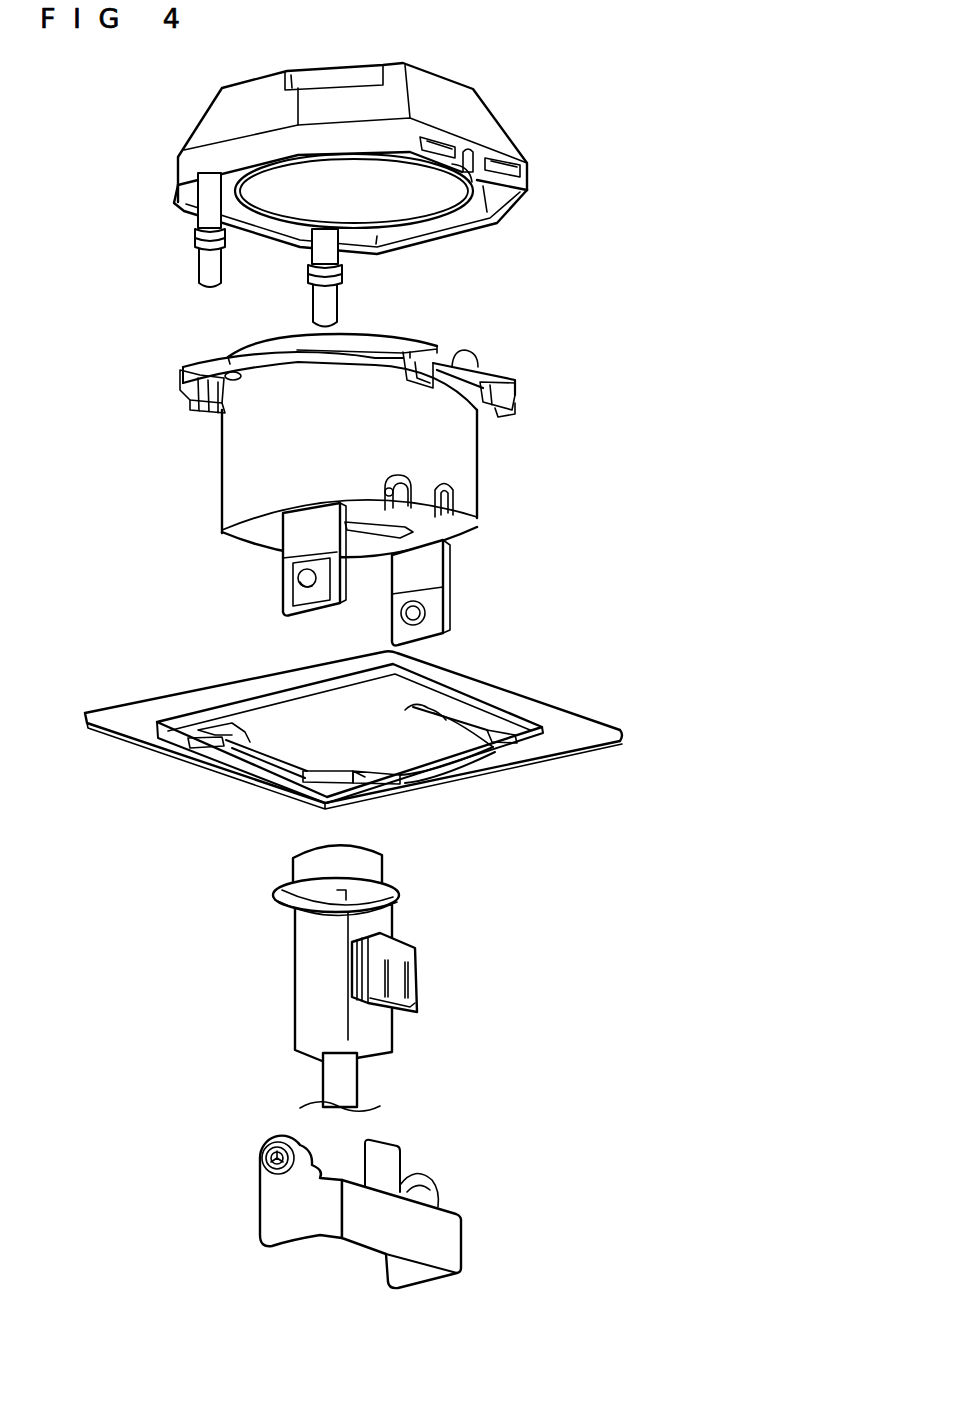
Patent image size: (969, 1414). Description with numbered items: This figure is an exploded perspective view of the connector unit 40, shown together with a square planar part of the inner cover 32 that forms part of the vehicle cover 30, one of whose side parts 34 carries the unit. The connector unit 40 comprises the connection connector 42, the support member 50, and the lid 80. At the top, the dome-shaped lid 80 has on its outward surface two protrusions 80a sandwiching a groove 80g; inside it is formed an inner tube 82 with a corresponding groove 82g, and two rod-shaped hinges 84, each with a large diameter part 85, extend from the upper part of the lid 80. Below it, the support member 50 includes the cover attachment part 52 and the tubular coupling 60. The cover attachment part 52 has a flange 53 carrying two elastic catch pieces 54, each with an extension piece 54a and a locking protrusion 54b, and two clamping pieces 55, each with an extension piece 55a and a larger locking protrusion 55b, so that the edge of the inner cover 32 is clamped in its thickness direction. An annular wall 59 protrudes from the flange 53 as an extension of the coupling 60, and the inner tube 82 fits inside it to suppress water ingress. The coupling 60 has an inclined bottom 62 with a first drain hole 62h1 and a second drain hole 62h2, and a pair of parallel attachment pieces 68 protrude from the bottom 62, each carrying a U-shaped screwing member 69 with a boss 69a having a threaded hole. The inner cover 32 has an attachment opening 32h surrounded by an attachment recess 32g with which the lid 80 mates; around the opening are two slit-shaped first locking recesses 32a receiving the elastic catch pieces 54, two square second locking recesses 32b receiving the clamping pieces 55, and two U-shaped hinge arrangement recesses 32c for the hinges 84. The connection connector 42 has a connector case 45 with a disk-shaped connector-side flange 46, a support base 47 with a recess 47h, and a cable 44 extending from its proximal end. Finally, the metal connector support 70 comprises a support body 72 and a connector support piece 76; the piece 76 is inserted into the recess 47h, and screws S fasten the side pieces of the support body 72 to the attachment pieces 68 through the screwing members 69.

The connector unit 40 is at (526, 52).
The lid 80 is at (444, 72).
The protrusions 80a is at (443, 138).
The groove 80g is at (471, 157).
The inner tube 82 is at (443, 240).
The groove 82g is at (447, 173).
The hinges 84 is at (200, 272).
The large diameter part 85 is at (194, 231).
The support member 50 is at (528, 462).
The cover attachment part 52 is at (487, 376).
The flange 53 is at (388, 340).
The elastic catch pieces 54 is at (587, 378).
The extension piece 54a is at (514, 400).
The locking protrusion 54b is at (515, 410).
The clamping pieces 55 is at (113, 378).
The extension piece 55a is at (180, 388).
The locking protrusion 55b is at (183, 404).
The annular wall 59 is at (358, 333).
The coupling 60 is at (478, 488).
The bottom 62 is at (250, 542).
The first drain hole 62h1 is at (475, 530).
The second drain hole 62h2 is at (388, 486).
The attachment pieces 68 is at (307, 527).
The screwing member 69 is at (338, 578).
The boss 69a is at (394, 613).
The vehicle cover 30 is at (590, 714).
The inner cover 32 is at (378, 741).
The side parts 34 is at (350, 733).
The first locking recesses 32a is at (443, 717).
The second locking recesses 32b is at (233, 728).
The hinge arrangement recesses 32c is at (321, 778).
The attachment recess 32g is at (421, 760).
The attachment opening 32h is at (443, 764).
The connection connector 42 is at (389, 869).
The cable 44 is at (345, 1082).
The connector case 45 is at (307, 977).
The connector-side flange 46 is at (401, 897).
The support base 47 is at (418, 982).
The recess 47h is at (385, 1005).
The connector support 70 is at (515, 1165).
The support body 72 is at (441, 1243).
The connector support piece 76 is at (403, 1163).
The screw S is at (268, 1148).